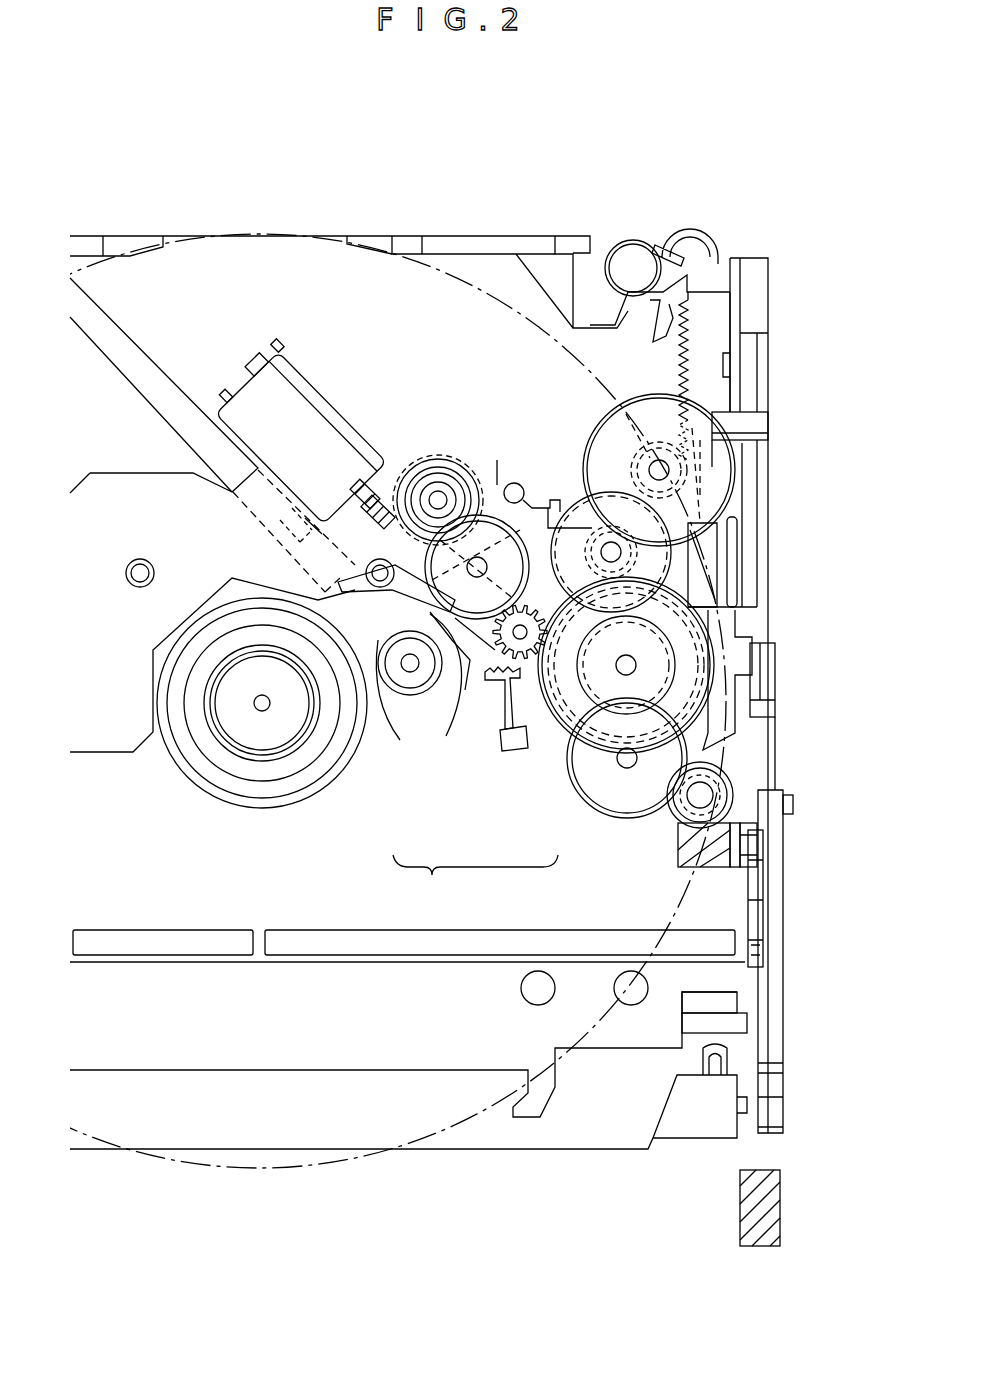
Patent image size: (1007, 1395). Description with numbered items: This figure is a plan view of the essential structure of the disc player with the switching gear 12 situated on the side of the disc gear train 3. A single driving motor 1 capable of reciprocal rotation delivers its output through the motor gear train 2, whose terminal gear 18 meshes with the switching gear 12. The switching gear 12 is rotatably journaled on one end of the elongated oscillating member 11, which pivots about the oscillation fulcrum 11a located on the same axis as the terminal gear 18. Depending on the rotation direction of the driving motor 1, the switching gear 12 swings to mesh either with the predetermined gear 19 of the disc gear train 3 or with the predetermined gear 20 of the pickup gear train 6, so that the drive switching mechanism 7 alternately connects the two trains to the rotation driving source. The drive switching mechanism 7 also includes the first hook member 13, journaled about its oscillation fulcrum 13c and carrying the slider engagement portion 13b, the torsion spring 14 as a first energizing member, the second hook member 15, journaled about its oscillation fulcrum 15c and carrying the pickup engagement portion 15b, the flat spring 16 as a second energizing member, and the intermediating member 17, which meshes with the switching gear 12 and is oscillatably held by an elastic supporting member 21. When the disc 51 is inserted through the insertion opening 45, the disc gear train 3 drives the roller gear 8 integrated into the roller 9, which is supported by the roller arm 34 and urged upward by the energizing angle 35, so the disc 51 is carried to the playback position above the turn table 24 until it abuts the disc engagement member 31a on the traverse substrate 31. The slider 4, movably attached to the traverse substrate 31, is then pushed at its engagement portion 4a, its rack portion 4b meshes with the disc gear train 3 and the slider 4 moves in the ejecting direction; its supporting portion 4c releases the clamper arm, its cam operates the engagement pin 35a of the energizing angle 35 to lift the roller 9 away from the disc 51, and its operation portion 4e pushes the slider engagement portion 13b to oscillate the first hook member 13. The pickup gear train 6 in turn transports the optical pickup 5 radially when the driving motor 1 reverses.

The driving motor 1 is at (312, 370).
The motor gear train 2 is at (427, 452).
The disc gear train 3 is at (740, 740).
The slider 4 is at (776, 369).
The engagement portion 4a is at (709, 296).
The rack portion 4b is at (697, 331).
The supporting portion 4c is at (767, 428).
The operation portion 4e is at (740, 490).
The optical pickup 5 is at (123, 470).
The pickup gear train 6 is at (282, 549).
The drive switching mechanism 7 is at (475, 880).
The roller gear 8 is at (770, 943).
The roller 9 is at (395, 947).
The oscillating member 11 is at (468, 688).
The oscillation fulcrum 11a is at (477, 556).
The switching gear 12 is at (545, 660).
The first hook member 13 is at (700, 493).
The slider engagement portion 13b is at (700, 560).
The oscillation fulcrum 13c is at (594, 548).
The torsion spring 14 is at (520, 485).
The second hook member 15 is at (372, 600).
The pickup engagement portion 15b is at (313, 523).
The oscillation fulcrum 15c is at (358, 486).
The flat spring 16 is at (447, 705).
The intermediating member 17 is at (496, 730).
The terminal gear 18 is at (485, 555).
The predetermined gear 19 is at (685, 641).
The predetermined gear 20 is at (398, 690).
The supporting member 21 is at (494, 720).
The turn table 24 is at (192, 778).
The traverse substrate 31 is at (131, 234).
The disc engagement member 31a is at (413, 233).
The roller arm 34 is at (470, 1072).
The energizing angle 35 is at (785, 1042).
The engagement pin 35a is at (794, 806).
The insertion opening 45 is at (785, 1203).
The disc 51 is at (350, 230).